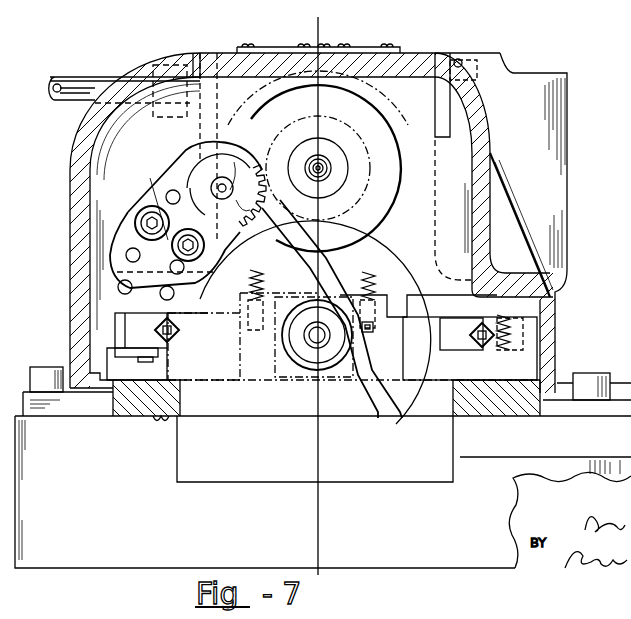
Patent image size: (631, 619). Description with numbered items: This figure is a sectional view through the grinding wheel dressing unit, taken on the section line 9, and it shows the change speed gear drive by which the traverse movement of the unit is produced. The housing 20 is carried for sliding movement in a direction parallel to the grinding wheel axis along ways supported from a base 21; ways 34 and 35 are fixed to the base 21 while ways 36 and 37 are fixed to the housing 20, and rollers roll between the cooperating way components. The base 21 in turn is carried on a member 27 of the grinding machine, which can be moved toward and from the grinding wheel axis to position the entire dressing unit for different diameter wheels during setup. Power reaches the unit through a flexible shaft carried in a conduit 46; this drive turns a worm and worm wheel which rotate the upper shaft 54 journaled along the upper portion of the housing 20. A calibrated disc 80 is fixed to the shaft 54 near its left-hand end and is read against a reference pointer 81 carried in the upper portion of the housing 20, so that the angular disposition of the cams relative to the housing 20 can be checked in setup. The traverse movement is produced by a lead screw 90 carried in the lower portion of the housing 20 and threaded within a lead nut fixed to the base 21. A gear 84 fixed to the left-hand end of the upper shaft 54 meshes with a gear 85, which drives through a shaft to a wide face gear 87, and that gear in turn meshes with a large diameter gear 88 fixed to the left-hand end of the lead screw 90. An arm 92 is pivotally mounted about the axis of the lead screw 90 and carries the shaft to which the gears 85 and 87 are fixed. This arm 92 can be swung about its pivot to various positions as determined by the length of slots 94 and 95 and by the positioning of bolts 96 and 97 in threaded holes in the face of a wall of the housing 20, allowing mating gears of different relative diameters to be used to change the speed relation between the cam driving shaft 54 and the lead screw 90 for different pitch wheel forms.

The section line 9 is at (290, 575).
The housing 20 is at (510, 73).
The base 21 is at (557, 368).
The member 27 is at (503, 490).
The way 34 is at (203, 340).
The way 35 is at (470, 343).
The way 36 is at (490, 317).
The way 37 is at (143, 322).
The conduit 46 is at (68, 83).
The shaft 54 is at (319, 162).
The calibrated disc 80 is at (390, 190).
The reference pointer 81 is at (350, 62).
The gear 84 is at (262, 160).
The gear 85 is at (203, 173).
The wide face gear 87 is at (150, 178).
The large diameter gear 88 is at (258, 435).
The lead screw 90 is at (380, 318).
The arm 92 is at (322, 271).
The slot 94 is at (138, 240).
The slot 95 is at (172, 268).
The bolt 96 is at (148, 212).
The bolt 97 is at (217, 240).